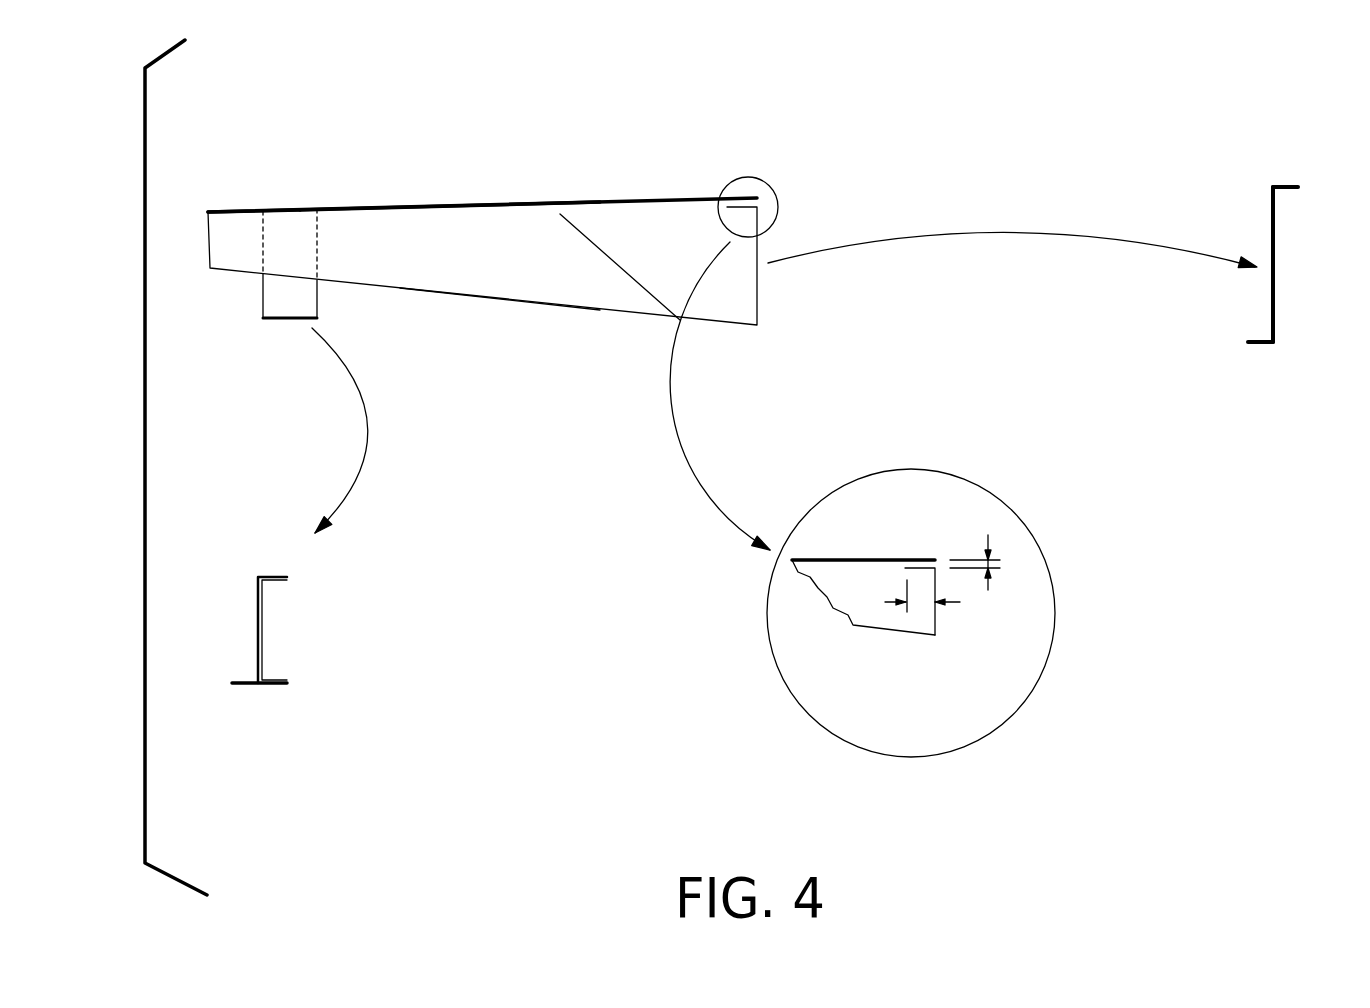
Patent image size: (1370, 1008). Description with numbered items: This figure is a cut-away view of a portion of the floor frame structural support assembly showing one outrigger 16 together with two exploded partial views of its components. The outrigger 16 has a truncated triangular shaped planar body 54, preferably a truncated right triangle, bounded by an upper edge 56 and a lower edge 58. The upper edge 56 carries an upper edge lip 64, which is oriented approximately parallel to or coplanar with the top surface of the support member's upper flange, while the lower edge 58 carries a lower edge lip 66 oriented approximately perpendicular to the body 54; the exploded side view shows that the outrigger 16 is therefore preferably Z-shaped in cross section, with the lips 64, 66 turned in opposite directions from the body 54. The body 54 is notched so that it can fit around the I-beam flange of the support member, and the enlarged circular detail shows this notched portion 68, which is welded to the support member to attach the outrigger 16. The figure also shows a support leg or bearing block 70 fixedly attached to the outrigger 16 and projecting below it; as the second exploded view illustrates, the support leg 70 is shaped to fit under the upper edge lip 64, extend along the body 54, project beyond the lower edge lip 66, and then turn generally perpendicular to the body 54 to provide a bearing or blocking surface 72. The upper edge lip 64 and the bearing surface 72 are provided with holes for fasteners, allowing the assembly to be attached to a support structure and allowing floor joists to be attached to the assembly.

The outrigger 16 is at (588, 165).
The body 54 is at (610, 252).
The upper edge 56 is at (458, 208).
The lower edge 58 is at (500, 297).
The upper edge lip 64 is at (240, 212).
The lower edge lip 66 is at (1255, 341).
The notched portion 68 is at (773, 196).
The support leg 70 is at (272, 297).
The bearing surface 72 is at (280, 685).